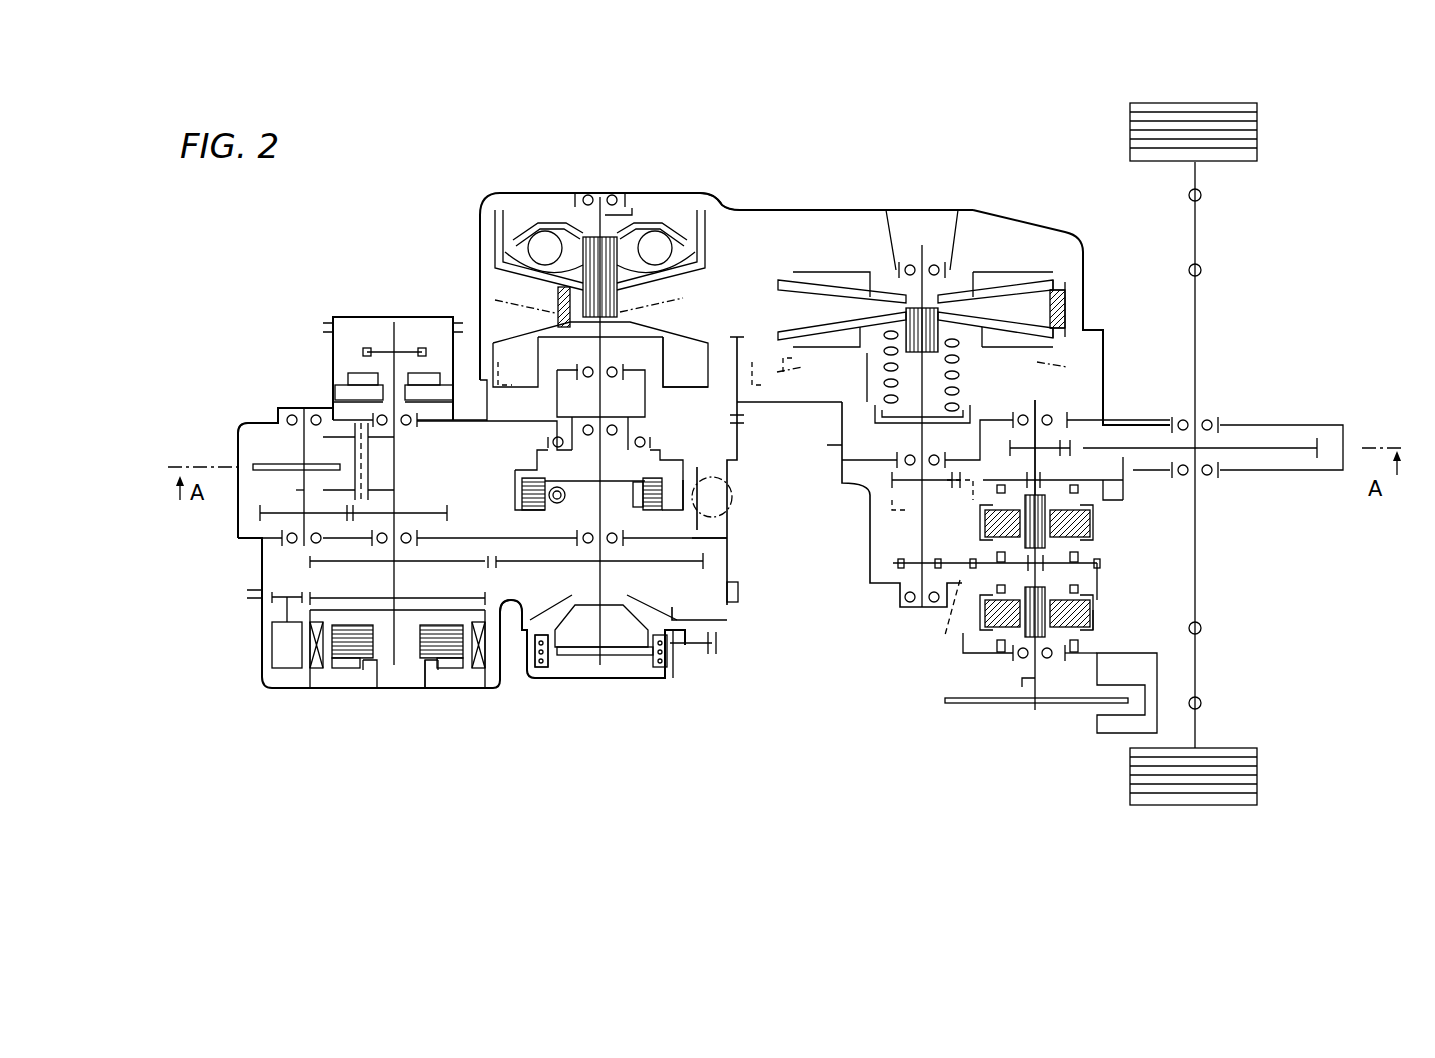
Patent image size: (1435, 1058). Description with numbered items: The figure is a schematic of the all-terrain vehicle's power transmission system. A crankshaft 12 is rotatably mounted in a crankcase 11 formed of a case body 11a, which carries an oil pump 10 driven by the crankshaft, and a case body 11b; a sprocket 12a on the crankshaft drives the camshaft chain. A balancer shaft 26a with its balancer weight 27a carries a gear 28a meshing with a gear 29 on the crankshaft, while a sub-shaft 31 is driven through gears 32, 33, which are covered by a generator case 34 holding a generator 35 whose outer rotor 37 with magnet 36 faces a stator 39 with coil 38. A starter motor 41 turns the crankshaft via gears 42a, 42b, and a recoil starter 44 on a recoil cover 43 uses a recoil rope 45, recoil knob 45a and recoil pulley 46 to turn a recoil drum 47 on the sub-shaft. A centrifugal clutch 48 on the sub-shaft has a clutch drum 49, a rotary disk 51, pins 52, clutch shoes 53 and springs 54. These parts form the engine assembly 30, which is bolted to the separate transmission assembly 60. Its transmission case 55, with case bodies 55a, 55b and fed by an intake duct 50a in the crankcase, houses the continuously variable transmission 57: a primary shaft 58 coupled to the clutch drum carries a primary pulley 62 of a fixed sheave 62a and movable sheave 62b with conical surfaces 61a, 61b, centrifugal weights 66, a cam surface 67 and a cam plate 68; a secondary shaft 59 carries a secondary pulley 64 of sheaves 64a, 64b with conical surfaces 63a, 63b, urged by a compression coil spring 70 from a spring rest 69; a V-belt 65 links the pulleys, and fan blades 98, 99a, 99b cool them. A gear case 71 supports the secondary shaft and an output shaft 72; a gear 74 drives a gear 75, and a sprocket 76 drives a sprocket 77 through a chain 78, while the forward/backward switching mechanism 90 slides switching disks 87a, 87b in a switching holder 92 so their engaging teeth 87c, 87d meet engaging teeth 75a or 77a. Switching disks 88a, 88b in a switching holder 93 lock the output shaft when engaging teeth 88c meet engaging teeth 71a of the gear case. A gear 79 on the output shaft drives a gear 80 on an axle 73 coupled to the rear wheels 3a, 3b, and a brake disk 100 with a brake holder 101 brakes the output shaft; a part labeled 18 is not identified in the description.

The rear wheel 3a is at (1260, 126).
The rear wheel 3b is at (1232, 750).
The oil pump 10 is at (355, 375).
The crankcase 11 is at (248, 415).
The case body 11a is at (236, 430).
The case body 11b is at (236, 527).
The crankshaft 12 is at (396, 640).
The sprocket 12a is at (412, 350).
The clutch 18 is at (370, 458).
The balancer shaft 26a is at (300, 492).
The balancer weight 27a is at (265, 462).
The gear 28a is at (262, 542).
The gear 29 is at (449, 513).
The engine assembly 30 is at (752, 560).
The sub-shaft 31 is at (598, 660).
The gear 32 is at (705, 575).
The gear 33 is at (505, 625).
The generator case 34 is at (320, 690).
The generator 35 is at (444, 684).
The magnet 36 is at (318, 662).
The outer rotor 37 is at (394, 624).
The coil 38 is at (350, 662).
The stator 39 is at (372, 660).
The starter motor 41 is at (285, 668).
The gear 42a is at (280, 600).
The gear 42b is at (357, 595).
The recoil cover 43 is at (620, 680).
The recoil starter 44 is at (648, 688).
The recoil rope 45 is at (542, 670).
The recoil knob 45a is at (692, 644).
The recoil pulley 46 is at (668, 679).
The recoil drum 47 is at (632, 617).
The centrifugal clutch 48 is at (660, 460).
The clutch drum 49 is at (725, 500).
The intake duct 50a is at (732, 536).
The rotary disk 51 is at (590, 488).
The pin 52 is at (652, 507).
The clutch shoe 53 is at (535, 488).
The spring 54 is at (557, 504).
The transmission case 55 is at (790, 208).
The case body 55a is at (790, 405).
The case body 55b is at (760, 207).
The continuously variable transmission 57 is at (818, 222).
The primary shaft 58 is at (615, 202).
The secondary shaft 59 is at (926, 254).
The transmission assembly 60 is at (1025, 212).
The conical surface 61a is at (680, 318).
The conical surface 61b is at (702, 273).
The primary pulley 62 is at (476, 235).
The fixed sheave 62a is at (547, 338).
The movable sheave 62b is at (702, 262).
The conical surface 63a is at (1070, 300).
The conical surface 63b is at (1070, 316).
The secondary pulley 64 is at (977, 236).
The fixed sheave 64a is at (1005, 300).
The movable sheave 64b is at (1082, 350).
The V-belt 65 is at (1068, 285).
The centrifugal weight 66 is at (547, 240).
The cam surface 67 is at (510, 232).
The cam plate 68 is at (575, 237).
The spring rest 69 is at (884, 425).
The compression coil spring 70 is at (960, 390).
The gear case 71 is at (887, 592).
The engaging teeth 71a is at (1060, 690).
The output shaft 72 is at (1033, 708).
The axle 73 is at (1198, 573).
The gear 74 is at (905, 490).
The gear 75 is at (1118, 503).
The engaging teeth 75a is at (985, 497).
The sprocket 76 is at (885, 566).
The sprocket 77 is at (1097, 566).
The engaging teeth 77a is at (1092, 583).
The chain 78 is at (955, 592).
The gear 79 is at (1095, 432).
The gear 80 is at (1213, 467).
The switching disk 87a is at (1092, 468).
The switching disk 87b is at (1093, 527).
The engaging teeth 87c is at (1095, 512).
The engaging teeth 87d is at (1020, 684).
The switching disk 88a is at (1095, 628).
The switching disk 88b is at (1003, 560).
The engaging teeth 88c is at (1100, 652).
The forward/backward switching mechanism 90 is at (1097, 486).
The switching holder 92 is at (1097, 540).
The switching holder 93 is at (1095, 637).
The fan blade 98 is at (682, 392).
The fan blade 99a is at (847, 270).
The fan blade 99b is at (1010, 342).
The brake disk 100 is at (955, 705).
The brake holder 101 is at (1110, 740).